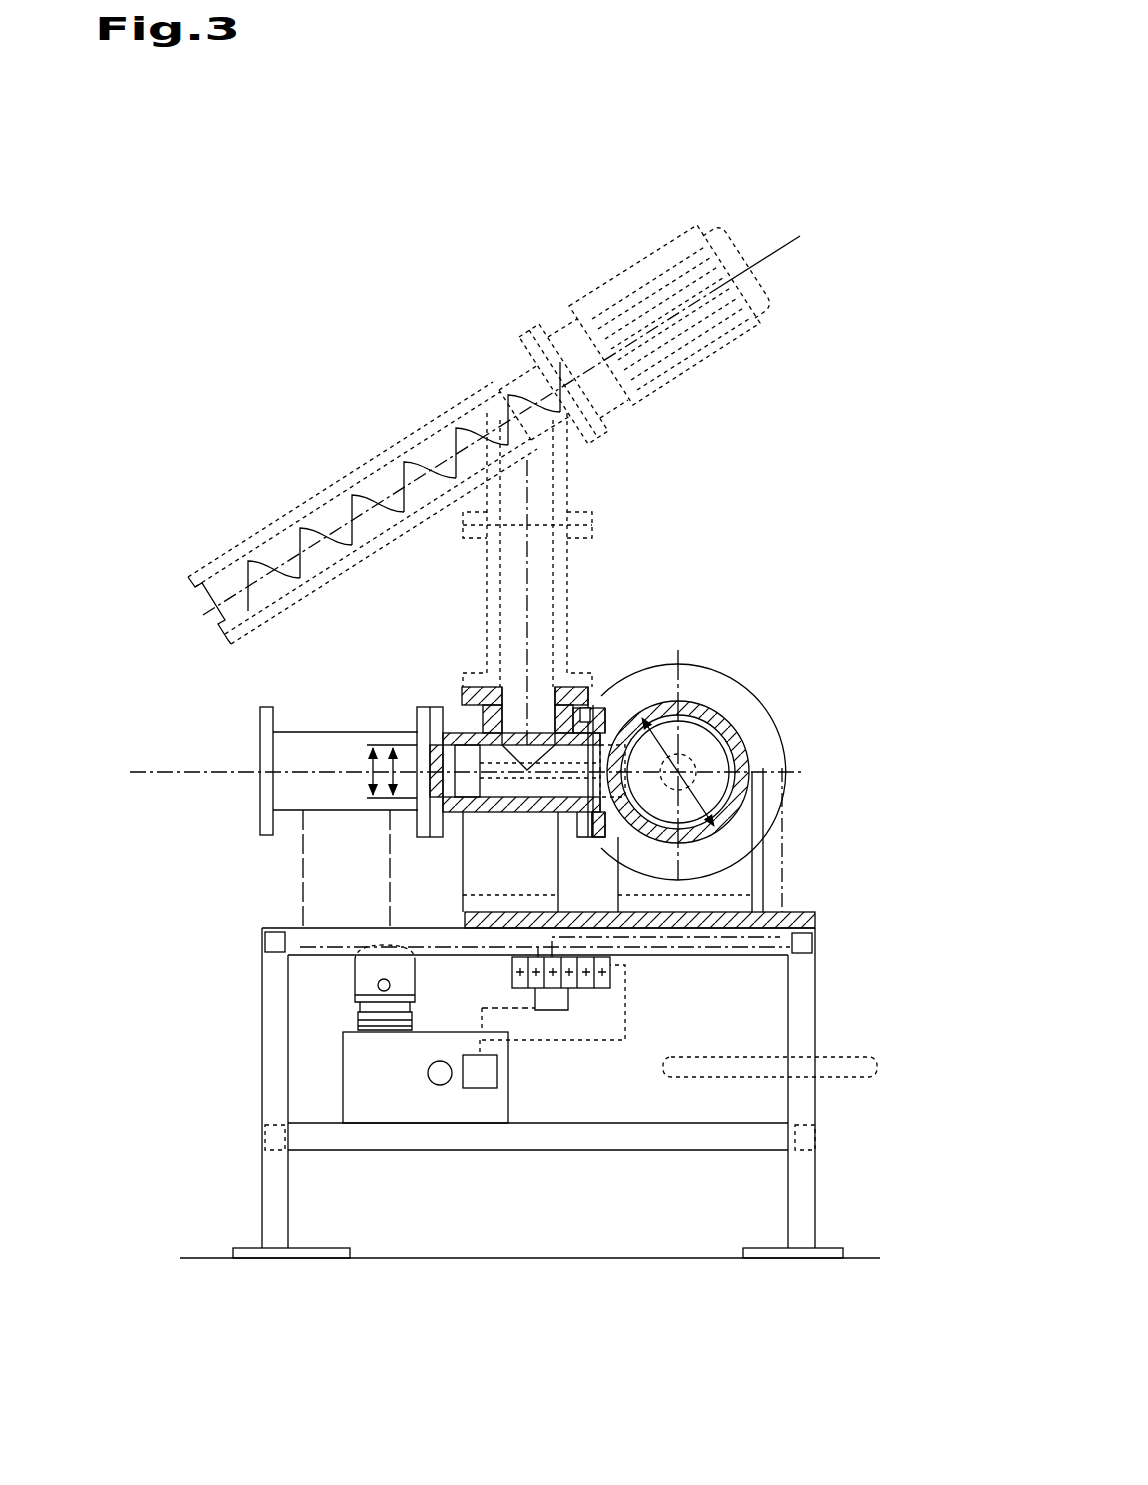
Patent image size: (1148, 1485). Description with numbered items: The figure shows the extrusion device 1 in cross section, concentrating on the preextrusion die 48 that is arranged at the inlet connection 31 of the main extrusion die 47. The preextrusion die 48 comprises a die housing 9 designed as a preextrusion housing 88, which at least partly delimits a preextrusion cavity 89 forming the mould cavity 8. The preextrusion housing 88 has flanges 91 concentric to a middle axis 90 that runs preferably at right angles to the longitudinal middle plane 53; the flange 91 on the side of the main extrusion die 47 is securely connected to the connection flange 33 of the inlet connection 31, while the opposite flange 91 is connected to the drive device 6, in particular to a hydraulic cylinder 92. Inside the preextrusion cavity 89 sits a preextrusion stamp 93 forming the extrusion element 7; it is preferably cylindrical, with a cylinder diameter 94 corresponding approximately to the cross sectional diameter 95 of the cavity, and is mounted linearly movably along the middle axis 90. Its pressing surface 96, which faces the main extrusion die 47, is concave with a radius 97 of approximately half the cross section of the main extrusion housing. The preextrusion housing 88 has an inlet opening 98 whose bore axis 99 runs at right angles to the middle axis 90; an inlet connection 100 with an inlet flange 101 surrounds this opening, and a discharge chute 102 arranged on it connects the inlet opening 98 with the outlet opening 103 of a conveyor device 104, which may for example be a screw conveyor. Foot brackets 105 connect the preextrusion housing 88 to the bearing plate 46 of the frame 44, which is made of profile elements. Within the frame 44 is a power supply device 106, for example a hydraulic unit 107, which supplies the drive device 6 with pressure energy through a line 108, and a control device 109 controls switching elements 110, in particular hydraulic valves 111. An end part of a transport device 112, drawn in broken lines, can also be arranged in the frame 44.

The extrusion device 1 is at (862, 478).
The drive device 6 is at (228, 688).
The extrusion element 7 is at (372, 768).
The mould cavity 8 is at (430, 830).
The die housing 9 is at (395, 630).
The inlet connection 31 is at (615, 702).
The connection flange 33 is at (596, 725).
The frame 44 is at (230, 1110).
The bearing plate 46 is at (790, 908).
The main extrusion die 47 is at (738, 705).
The preextrusion die 48 is at (310, 500).
The longitudinal middle plane 53 is at (627, 695).
The preextrusion housing 88 is at (432, 700).
The preextrusion cavity 89 is at (417, 782).
The middle axis 90 is at (150, 775).
The flange 91 is at (440, 735).
The hydraulic cylinder 92 is at (300, 735).
The preextrusion stamp 93 is at (478, 808).
The cylinder diameter 94 is at (373, 782).
The cross sectional diameter 95 is at (393, 772).
The pressing surface 96 is at (515, 808).
The radius 97 is at (530, 812).
The inlet opening 98 is at (545, 690).
The bore axis 99 is at (535, 478).
The inlet connection 100 is at (455, 725).
The inlet flange 101 is at (481, 690).
The discharge chute 102 is at (545, 555).
The outlet opening 103 is at (545, 400).
The conveyor device 104 is at (420, 412).
The foot brackets 105 is at (573, 878).
The power supply device 106 is at (518, 1097).
The hydraulic unit 107 is at (447, 1107).
The line 108 is at (300, 912).
The control device 109 is at (488, 1100).
The switching elements 110 is at (597, 1013).
The hydraulic valves 111 is at (552, 985).
The transport device 112 is at (850, 1045).